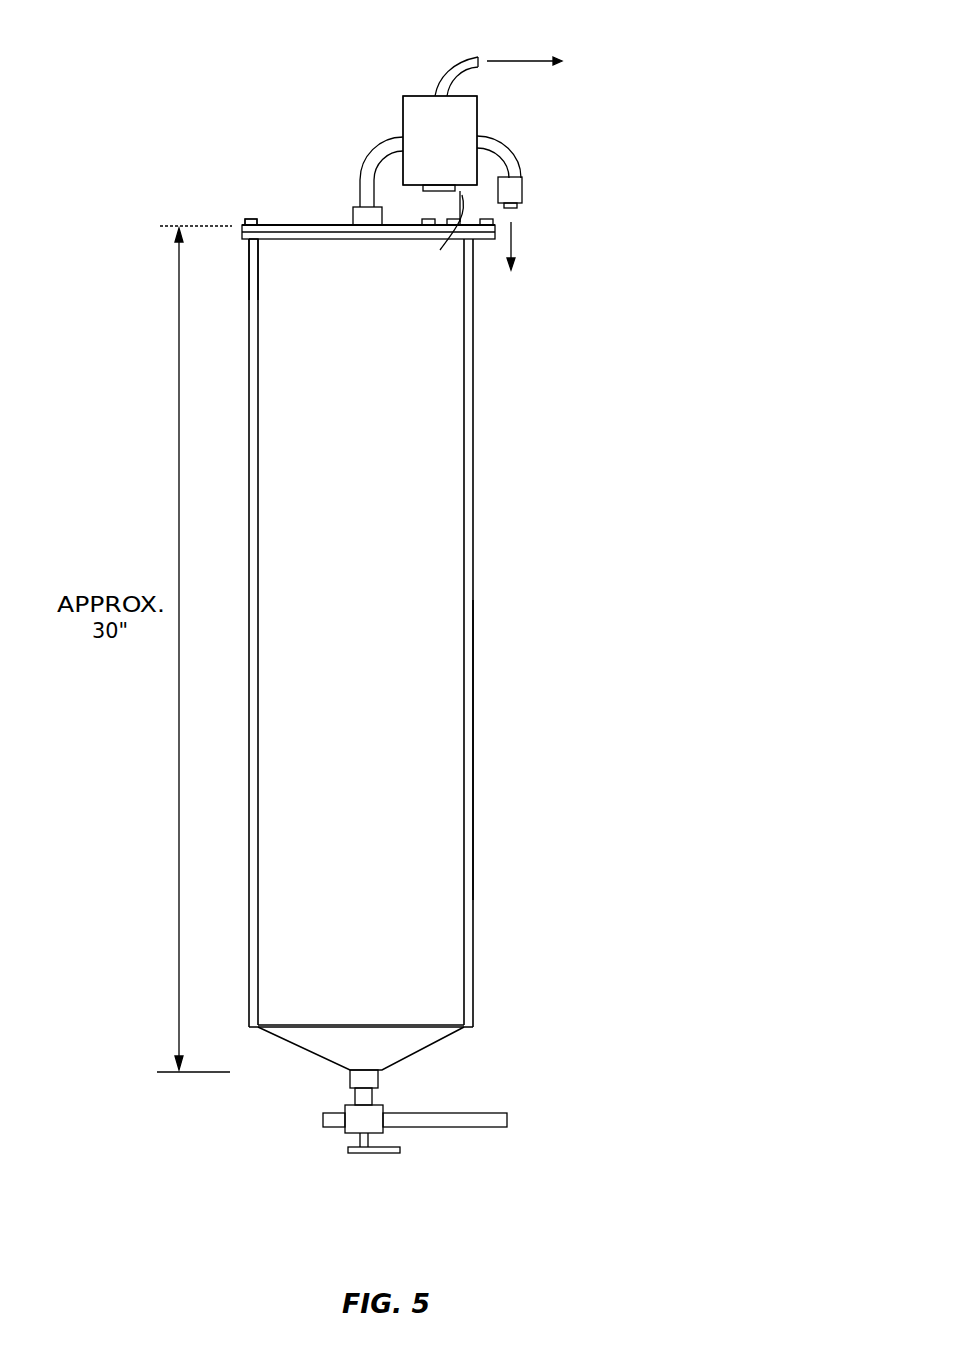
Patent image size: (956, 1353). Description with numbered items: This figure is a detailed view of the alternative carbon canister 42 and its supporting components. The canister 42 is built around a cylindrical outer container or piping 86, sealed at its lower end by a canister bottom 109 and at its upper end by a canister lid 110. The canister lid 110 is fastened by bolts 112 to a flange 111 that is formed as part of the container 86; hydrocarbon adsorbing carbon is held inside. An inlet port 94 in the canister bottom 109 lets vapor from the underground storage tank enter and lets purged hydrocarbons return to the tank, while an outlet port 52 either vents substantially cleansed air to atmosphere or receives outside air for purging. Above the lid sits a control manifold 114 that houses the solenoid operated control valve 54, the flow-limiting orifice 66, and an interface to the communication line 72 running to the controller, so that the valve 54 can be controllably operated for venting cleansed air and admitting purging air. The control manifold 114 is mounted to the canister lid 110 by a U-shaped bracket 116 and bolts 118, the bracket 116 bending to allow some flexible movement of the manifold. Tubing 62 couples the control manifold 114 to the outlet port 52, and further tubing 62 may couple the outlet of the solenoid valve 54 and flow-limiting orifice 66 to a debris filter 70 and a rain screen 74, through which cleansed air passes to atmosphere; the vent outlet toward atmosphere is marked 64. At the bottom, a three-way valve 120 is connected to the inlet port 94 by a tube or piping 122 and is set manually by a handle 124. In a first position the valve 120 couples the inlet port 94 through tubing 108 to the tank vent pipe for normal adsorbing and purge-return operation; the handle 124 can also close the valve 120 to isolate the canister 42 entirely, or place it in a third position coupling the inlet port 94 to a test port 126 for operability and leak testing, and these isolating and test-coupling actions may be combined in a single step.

The carbon canister 42 is at (475, 530).
The outer container or piping 86 is at (475, 766).
The canister bottom 109 is at (395, 1042).
The outlet port 52 is at (357, 224).
The canister lid 110 is at (290, 224).
The flange 111 is at (278, 238).
The bolts 112 is at (243, 223).
The solenoid operated control valve 54 is at (370, 126).
The flow-limiting orifice 66 is at (440, 140).
The control manifold 114 is at (403, 115).
The communication line 72 is at (470, 56).
The tubing 62 is at (378, 163).
The bolts 118 is at (418, 204).
The U-shaped bracket 116 is at (440, 250).
The debris filter 70 is at (579, 185).
The rain screen 74 is at (522, 185).
The vent outlet to atmosphere 64 is at (512, 208).
The inlet port 94 is at (370, 1082).
The tube or piping 122 is at (368, 1098).
The three-way valve 120 is at (370, 1122).
The test port 126 is at (323, 1117).
The tubing 108 is at (508, 1120).
The handle 124 is at (387, 1153).